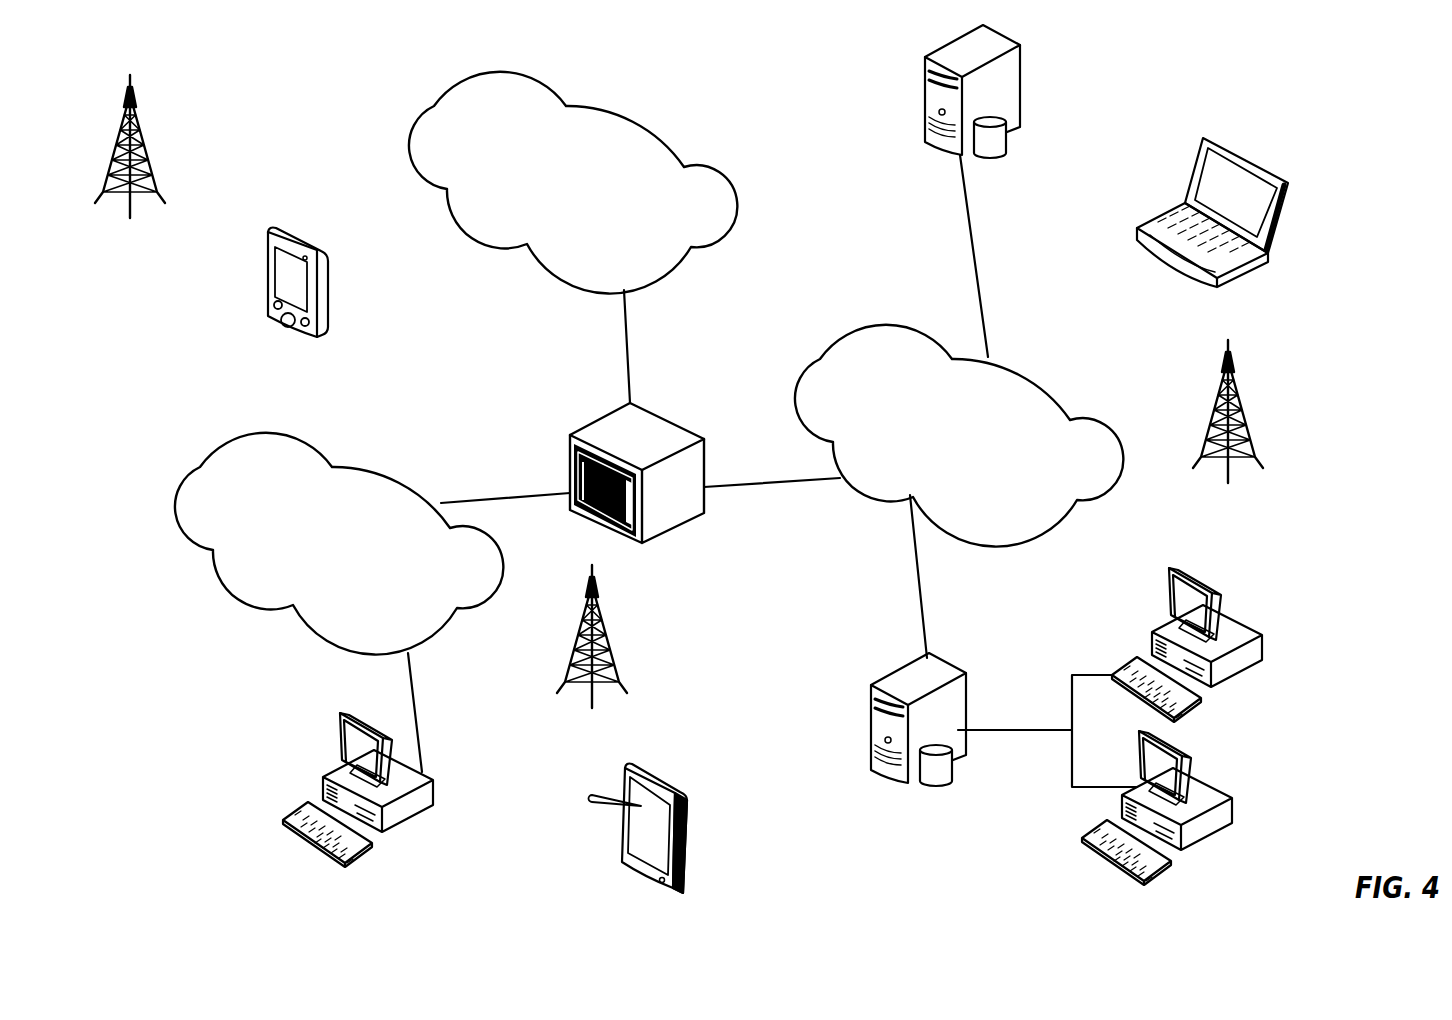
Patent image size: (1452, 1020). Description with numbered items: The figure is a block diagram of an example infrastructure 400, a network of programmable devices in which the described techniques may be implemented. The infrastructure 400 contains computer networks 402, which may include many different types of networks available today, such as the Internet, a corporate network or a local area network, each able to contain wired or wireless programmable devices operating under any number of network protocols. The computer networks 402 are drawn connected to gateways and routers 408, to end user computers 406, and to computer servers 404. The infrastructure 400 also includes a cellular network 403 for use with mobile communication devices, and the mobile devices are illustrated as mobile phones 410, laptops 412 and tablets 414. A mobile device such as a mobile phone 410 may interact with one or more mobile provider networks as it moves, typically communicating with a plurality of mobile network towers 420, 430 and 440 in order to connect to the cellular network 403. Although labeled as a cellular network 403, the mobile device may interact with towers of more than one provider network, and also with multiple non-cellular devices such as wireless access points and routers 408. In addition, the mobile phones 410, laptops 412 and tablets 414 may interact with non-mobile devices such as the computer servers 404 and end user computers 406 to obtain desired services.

The infrastructure 400 is at (1115, 132).
The computer networks 402 is at (318, 450).
The cellular network 403 is at (620, 110).
The computer servers 404 is at (927, 82).
The end user computers 406 is at (432, 782).
The gateways and routers 408 is at (662, 417).
The mobile phones 410 is at (303, 237).
The laptops 412 is at (1262, 165).
The tablets 414 is at (668, 777).
The mobile network tower 420 is at (592, 653).
The mobile network tower 430 is at (1228, 428).
The mobile network tower 440 is at (130, 162).